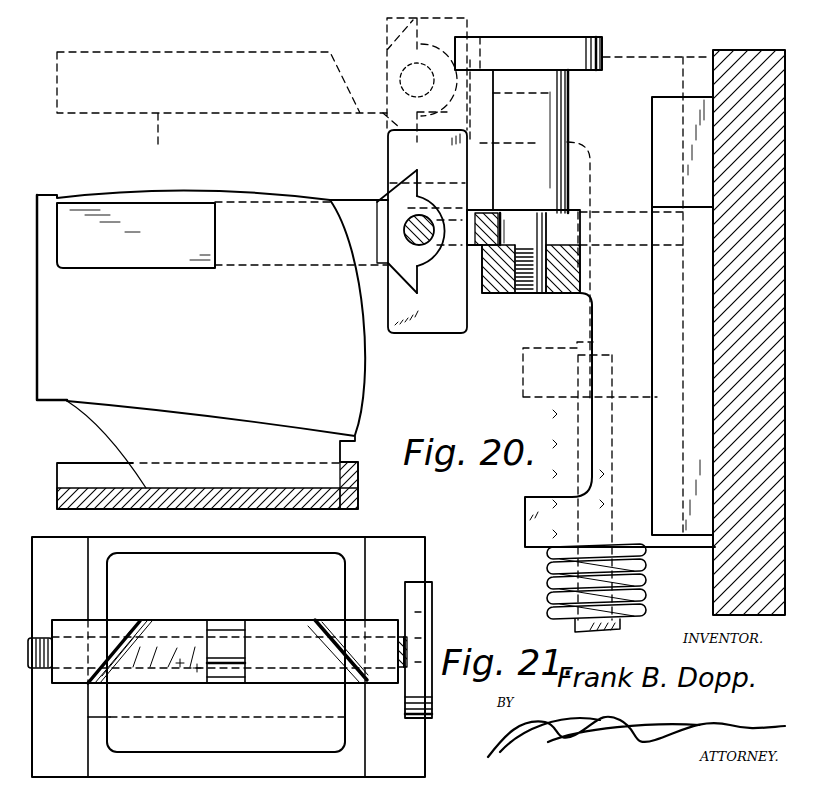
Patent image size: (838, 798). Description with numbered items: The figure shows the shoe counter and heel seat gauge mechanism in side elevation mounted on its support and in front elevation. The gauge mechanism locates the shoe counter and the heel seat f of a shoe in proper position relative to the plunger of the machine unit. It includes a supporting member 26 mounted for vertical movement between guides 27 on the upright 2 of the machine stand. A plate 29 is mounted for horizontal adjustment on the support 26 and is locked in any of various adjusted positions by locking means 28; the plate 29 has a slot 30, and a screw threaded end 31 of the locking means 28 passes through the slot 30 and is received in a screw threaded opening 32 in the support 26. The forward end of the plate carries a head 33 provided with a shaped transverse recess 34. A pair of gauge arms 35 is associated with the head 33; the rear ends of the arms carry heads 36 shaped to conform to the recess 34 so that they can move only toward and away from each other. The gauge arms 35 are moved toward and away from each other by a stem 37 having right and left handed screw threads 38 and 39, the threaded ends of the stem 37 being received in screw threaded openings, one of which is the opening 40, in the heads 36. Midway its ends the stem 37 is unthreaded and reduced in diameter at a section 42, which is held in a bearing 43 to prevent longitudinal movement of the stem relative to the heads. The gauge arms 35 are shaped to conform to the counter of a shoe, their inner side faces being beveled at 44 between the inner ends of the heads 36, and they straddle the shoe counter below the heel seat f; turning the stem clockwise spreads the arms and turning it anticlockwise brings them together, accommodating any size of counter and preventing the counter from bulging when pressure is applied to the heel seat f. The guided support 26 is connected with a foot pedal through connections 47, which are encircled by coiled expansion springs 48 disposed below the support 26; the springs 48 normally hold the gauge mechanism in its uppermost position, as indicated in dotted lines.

In FIG. 20, the upright 2 is at (719, 0).
In FIG. 20, the supporting member 26 is at (619, 456).
In FIG. 21, the supporting member 26 is at (367, 755).
In FIG. 20, the guides 27 is at (682, 296).
In FIG. 21, the guides 27 is at (228, 657).
In FIG. 20, the locking means 28 is at (566, 104).
In FIG. 20, the plate 29 is at (483, 213).
In FIG. 20, the slot 30 is at (567, 231).
In FIG. 20, the screw threaded end 31 is at (537, 282).
In FIG. 20, the screw threaded opening 32 is at (513, 290).
In FIG. 20, the head 33 is at (392, 157).
In FIG. 21, the head 33 is at (226, 652).
In FIG. 20, the transverse recess 34 is at (440, 268).
In FIG. 20, the gauge arms 35 is at (148, 208).
In FIG. 21, the gauge arms 35 is at (119, 626).
In FIG. 20, the heads 36 is at (406, 206).
In FIG. 20, the stem 37 is at (405, 246).
In FIG. 21, the stem 37 is at (434, 643).
In FIG. 21, the right handed screw thread 38 is at (397, 660).
In FIG. 21, the left handed screw thread 39 is at (43, 668).
In FIG. 20, the screw threaded opening 40 is at (413, 256).
In FIG. 21, the non-screw threaded reduced section 42 is at (221, 646).
In FIG. 21, the bearing 43 is at (230, 675).
In FIG. 21, the beveled inner side faces 44 is at (117, 657).
In FIG. 20, the connections 47 is at (618, 625).
In FIG. 20, the coiled expansion springs 48 is at (548, 572).
In FIG. 20, the heel seat f is at (203, 193).